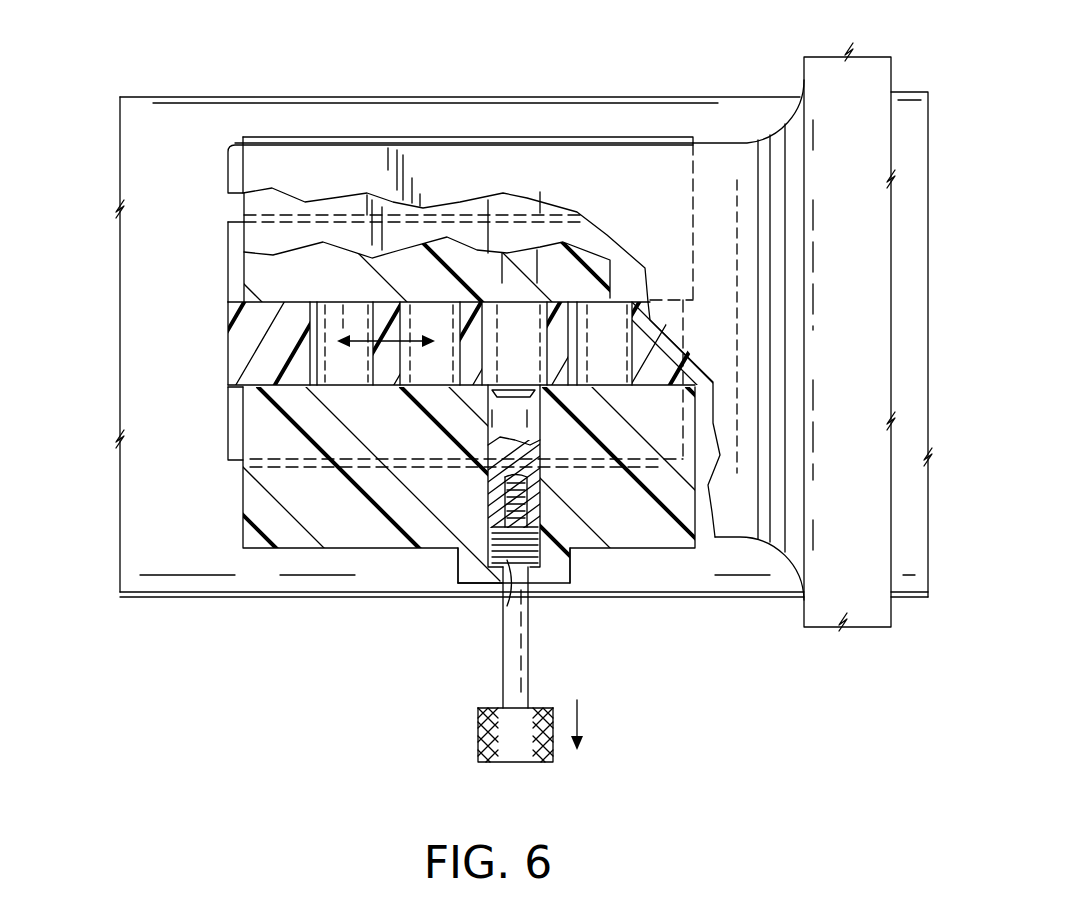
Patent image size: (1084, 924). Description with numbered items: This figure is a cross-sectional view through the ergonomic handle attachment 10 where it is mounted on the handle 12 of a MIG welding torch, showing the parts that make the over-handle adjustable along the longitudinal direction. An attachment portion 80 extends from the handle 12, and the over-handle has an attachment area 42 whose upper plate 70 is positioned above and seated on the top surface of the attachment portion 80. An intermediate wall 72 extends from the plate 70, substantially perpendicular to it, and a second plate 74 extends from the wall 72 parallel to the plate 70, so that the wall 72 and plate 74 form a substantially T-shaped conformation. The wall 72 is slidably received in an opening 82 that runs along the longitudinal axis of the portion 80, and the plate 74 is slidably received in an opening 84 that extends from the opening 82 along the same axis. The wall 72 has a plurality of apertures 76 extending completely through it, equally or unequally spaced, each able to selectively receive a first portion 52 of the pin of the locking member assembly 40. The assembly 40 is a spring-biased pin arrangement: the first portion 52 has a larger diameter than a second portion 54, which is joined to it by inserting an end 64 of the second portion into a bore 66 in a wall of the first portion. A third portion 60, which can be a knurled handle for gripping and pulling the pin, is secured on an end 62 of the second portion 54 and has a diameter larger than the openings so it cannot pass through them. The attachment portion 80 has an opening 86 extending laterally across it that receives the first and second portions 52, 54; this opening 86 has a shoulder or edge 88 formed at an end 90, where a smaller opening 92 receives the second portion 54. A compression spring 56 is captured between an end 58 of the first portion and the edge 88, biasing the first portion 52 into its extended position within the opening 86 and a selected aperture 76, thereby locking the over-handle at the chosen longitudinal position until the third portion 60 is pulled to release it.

The ergonomic handle attachment 10 is at (802, 76).
The handle 12 is at (914, 600).
The locking member assembly 40 is at (560, 765).
The attachment area 42 is at (583, 157).
The first portion of pin 52 is at (533, 415).
The second portion of pin 54 is at (518, 678).
The compression spring 56 is at (540, 545).
The end of first portion 58 is at (455, 562).
The third portion 60 is at (482, 747).
The end of second portion 62 is at (503, 705).
The end of second portion 64 is at (510, 487).
The bore 66 is at (530, 495).
The upper plate 70 is at (283, 160).
The intermediate wall 72 is at (250, 342).
The second plate 74 is at (228, 445).
The apertures 76 is at (423, 317).
The attachment portion 80 is at (252, 270).
The opening 82 is at (273, 382).
The opening 84 is at (278, 460).
The opening 86 is at (490, 270).
The shoulder or edge 88 is at (547, 560).
The end 90 is at (457, 573).
The smaller opening 92 is at (507, 603).